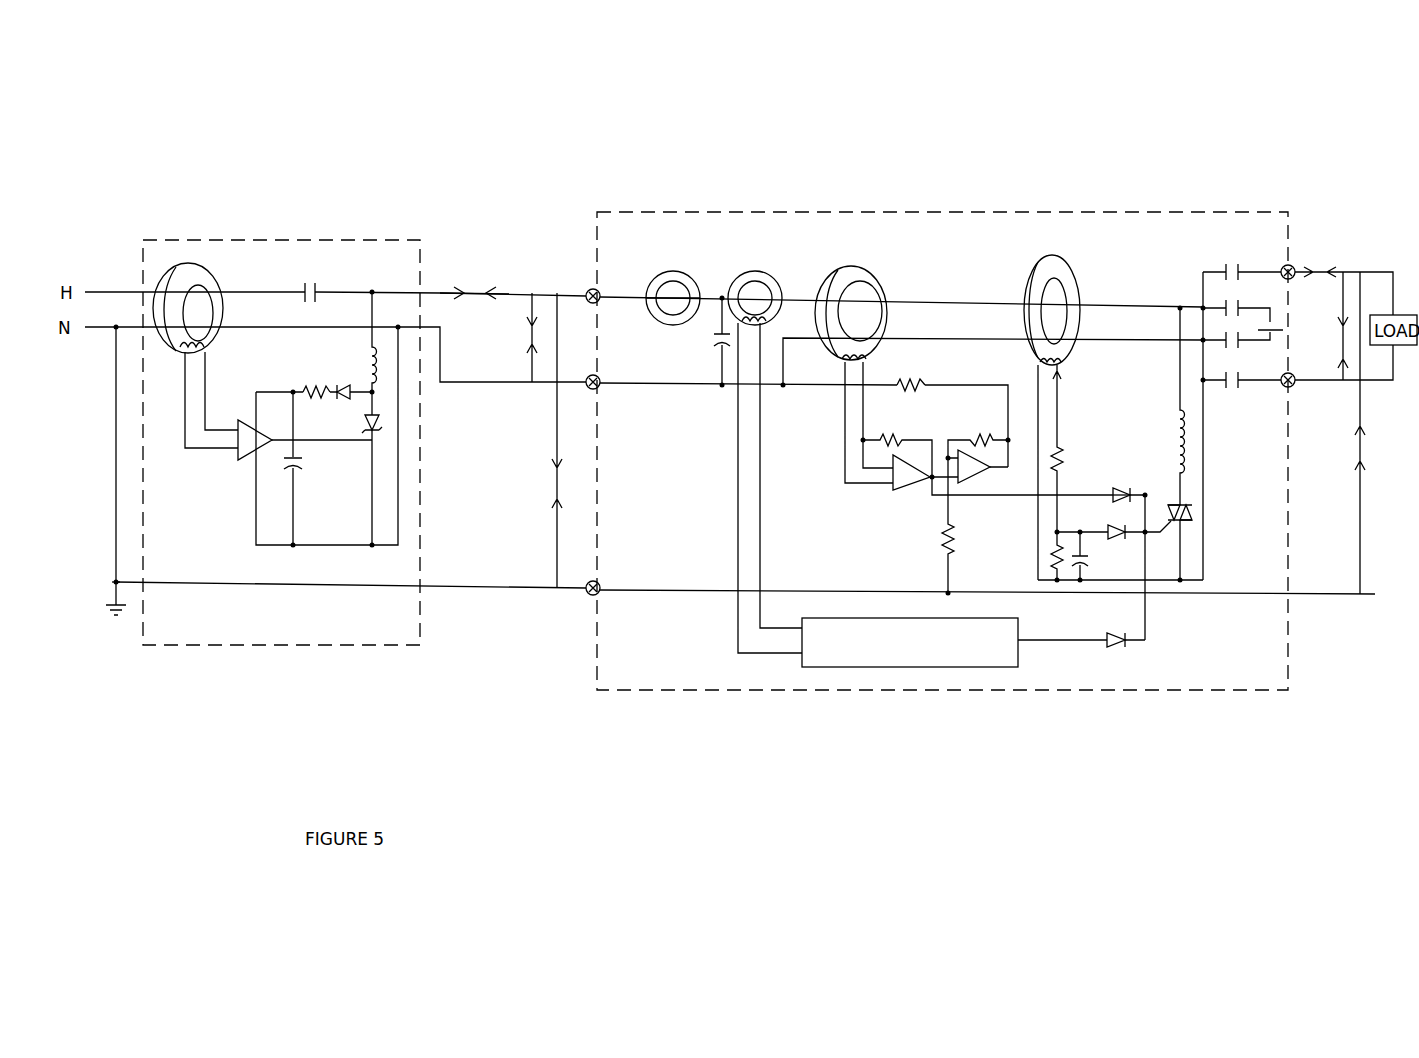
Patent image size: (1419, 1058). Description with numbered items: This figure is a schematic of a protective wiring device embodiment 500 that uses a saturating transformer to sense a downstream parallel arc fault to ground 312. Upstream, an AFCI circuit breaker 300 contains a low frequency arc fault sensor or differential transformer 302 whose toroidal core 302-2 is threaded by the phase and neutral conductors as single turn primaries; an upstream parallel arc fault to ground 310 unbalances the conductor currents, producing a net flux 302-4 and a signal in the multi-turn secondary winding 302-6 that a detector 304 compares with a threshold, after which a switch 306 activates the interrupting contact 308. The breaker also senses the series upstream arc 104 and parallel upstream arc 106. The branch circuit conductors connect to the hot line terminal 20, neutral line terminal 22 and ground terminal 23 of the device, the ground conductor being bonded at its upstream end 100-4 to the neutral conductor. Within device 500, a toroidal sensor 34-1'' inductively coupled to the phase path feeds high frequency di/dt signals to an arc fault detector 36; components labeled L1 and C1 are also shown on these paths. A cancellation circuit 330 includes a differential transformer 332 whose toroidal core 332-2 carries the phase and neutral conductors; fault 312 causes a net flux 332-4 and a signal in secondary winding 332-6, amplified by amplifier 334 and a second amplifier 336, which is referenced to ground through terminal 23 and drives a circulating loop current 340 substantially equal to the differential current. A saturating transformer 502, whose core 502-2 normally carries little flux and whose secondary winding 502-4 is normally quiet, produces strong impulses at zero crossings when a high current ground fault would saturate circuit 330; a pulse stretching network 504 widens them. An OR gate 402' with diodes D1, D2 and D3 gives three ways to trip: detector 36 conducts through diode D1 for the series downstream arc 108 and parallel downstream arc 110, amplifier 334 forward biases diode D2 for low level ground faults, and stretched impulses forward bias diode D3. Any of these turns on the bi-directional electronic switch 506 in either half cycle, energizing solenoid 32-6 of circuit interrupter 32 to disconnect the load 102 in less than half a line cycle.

The AFCI circuit breaker 300 is at (288, 232).
The differential transformer 302 is at (175, 279).
The toroidal core 302-2 is at (200, 289).
The net flux 302-4 is at (150, 296).
The secondary winding 302-6 is at (205, 348).
The detector 304 is at (250, 470).
The switch 306 is at (358, 464).
The interrupting contact 308 is at (328, 290).
The upstream end 100-4 is at (112, 578).
The spark gap 104 is at (475, 280).
The spark gap 106 is at (520, 335).
The upstream parallel arc fault to ground 310 is at (543, 475).
The hot line terminal 20 is at (588, 290).
The neutral line terminal 22 is at (590, 400).
The ground terminal 23 is at (585, 605).
The loop current 340 is at (98, 438).
The protective wiring device 500 is at (811, 210).
The toroidal sensor 34-1'' is at (696, 278).
The inductor L1 is at (668, 318).
The capacitor C1 is at (712, 345).
The net flux 332-4 is at (826, 290).
The differential transformer 332 is at (884, 295).
The toroidal core 332-2 is at (872, 290).
The secondary winding 332-6 is at (872, 352).
The cancellation circuit 330 is at (943, 479).
The amplifier 334 is at (900, 500).
The second amplifier 336 is at (983, 487).
The saturating transformer 502 is at (1083, 303).
The core 502-2 is at (1068, 285).
The secondary winding 502-4 is at (1062, 360).
The pulse stretching network 504 is at (1084, 502).
The diode D2 is at (1127, 481).
The OR gate 402' is at (1103, 464).
The diode D3 is at (1117, 544).
The solenoid 32-6 is at (1160, 440).
The bi-directional electronic switch 506 is at (1196, 518).
The circuit interrupter 32 is at (1203, 266).
The spark gap 108 is at (1316, 262).
The load 102 is at (1398, 375).
The spark gap 110 is at (1336, 330).
The downstream parallel arc fault to ground 312 is at (1350, 446).
The arc fault detector 36 is at (850, 612).
The diode D1 is at (1124, 656).